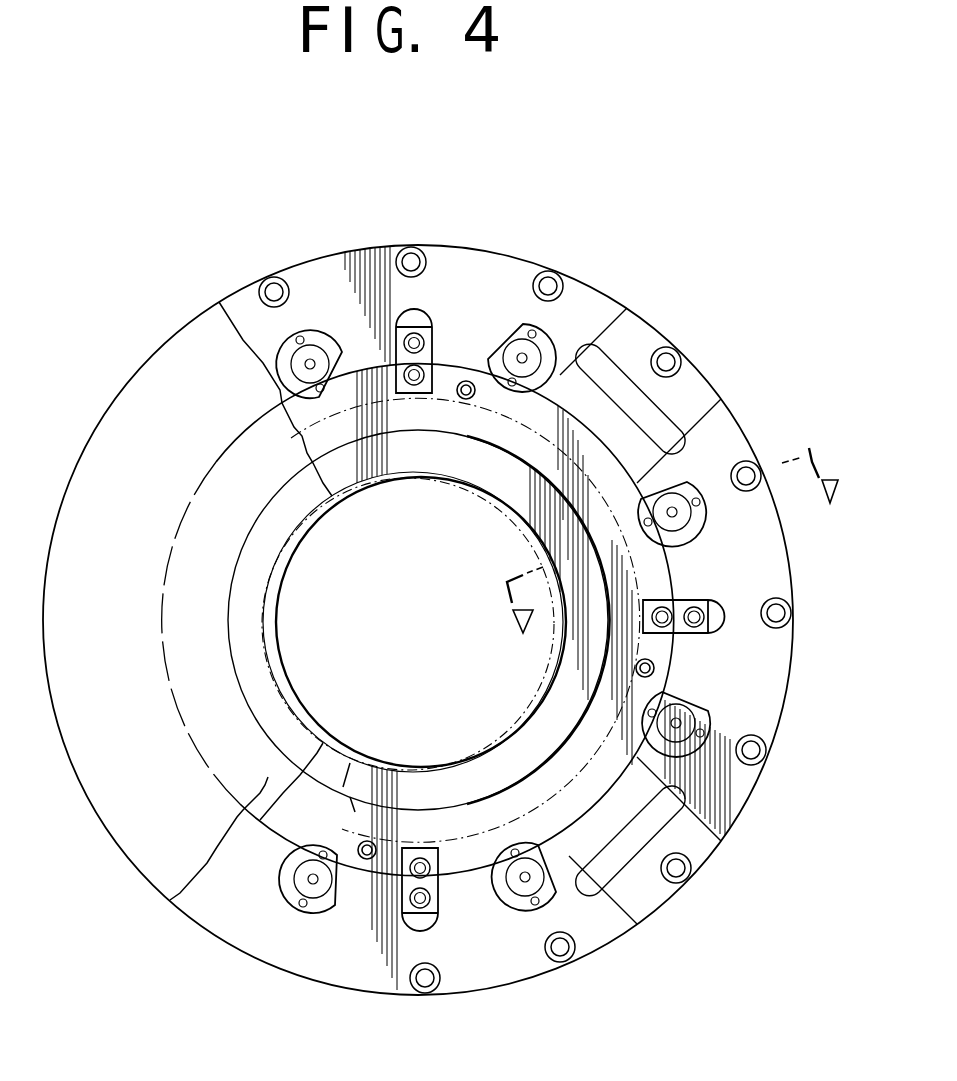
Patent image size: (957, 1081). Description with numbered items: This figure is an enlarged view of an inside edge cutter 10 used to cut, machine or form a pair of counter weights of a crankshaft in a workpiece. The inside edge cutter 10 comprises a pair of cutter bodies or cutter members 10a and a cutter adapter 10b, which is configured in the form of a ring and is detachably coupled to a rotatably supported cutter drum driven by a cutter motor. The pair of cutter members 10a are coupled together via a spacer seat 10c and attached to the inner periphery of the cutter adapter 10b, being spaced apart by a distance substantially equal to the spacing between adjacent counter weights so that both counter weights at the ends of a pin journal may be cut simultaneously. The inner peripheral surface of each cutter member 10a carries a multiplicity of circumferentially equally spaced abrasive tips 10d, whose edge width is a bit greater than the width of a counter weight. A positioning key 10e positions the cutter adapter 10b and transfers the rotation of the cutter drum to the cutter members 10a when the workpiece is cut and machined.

The inside edge cutter 10 is at (741, 421).
The cutter members 10a is at (522, 789).
The cutter adapter 10b is at (760, 567).
The spacer seat 10c is at (297, 832).
The abrasive tips 10d is at (527, 710).
The positioning key 10e is at (703, 637).